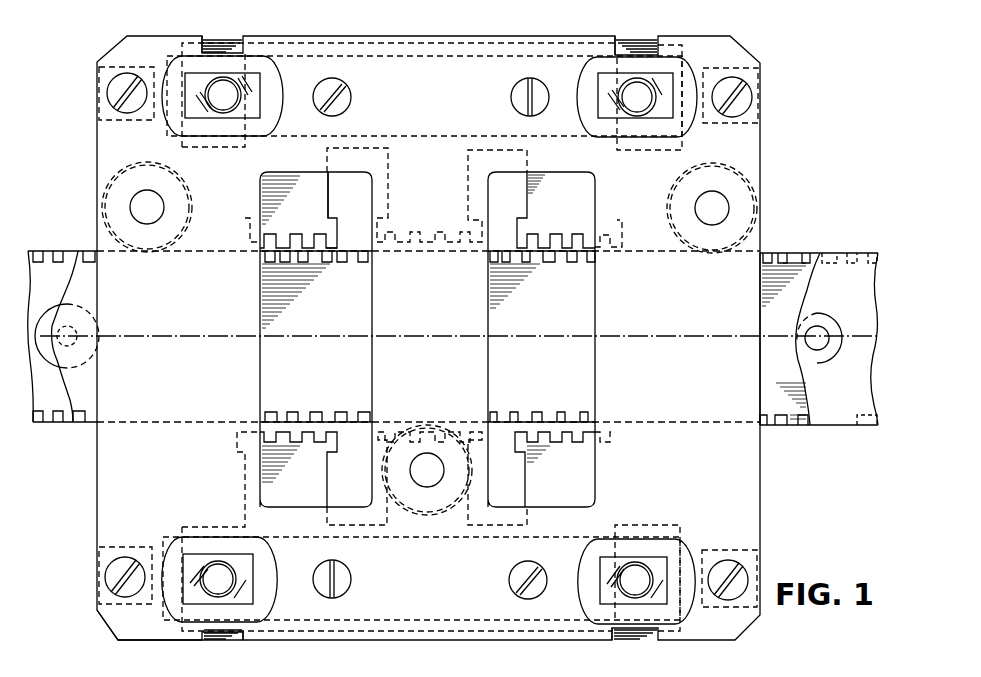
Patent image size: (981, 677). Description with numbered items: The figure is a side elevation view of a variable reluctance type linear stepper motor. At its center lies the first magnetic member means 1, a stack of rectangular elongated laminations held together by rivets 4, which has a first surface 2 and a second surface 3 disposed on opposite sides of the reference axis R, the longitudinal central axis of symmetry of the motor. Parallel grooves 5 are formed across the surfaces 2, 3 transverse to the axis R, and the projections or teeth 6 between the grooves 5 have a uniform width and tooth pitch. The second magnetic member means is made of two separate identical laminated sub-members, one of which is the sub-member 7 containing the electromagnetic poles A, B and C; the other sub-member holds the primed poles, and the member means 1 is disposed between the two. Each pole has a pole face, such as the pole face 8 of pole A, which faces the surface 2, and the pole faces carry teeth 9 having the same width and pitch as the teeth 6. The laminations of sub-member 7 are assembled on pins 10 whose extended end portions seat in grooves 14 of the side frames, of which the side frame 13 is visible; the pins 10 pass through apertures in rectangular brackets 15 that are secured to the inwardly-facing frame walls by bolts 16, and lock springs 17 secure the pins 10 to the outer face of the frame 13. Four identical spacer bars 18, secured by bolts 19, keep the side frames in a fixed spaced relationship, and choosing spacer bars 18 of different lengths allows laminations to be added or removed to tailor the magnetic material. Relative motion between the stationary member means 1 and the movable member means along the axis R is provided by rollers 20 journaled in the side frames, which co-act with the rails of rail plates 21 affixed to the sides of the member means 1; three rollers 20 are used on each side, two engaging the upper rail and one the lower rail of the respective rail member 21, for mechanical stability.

The first magnetic member means 1 is at (780, 391).
The first surface 2 is at (672, 257).
The second surface 3 is at (666, 421).
The rivets 4 is at (54, 358).
The grooves 5 is at (784, 252).
The teeth 6 is at (84, 251).
The sub-member 7 is at (222, 46).
The pole face 8 is at (336, 246).
The teeth 9 is at (318, 235).
The pins 10 is at (233, 104).
The side frame 13 is at (694, 486).
The grooves 14 is at (204, 45).
The rectangular brackets 15 is at (408, 54).
The bolts 16 is at (346, 104).
The lock springs 17 is at (272, 82).
The spacer bars 18 is at (110, 65).
The bolts 19 is at (118, 88).
The rollers 20 is at (182, 198).
The rail plates 21 is at (44, 290).
The pole A is at (309, 202).
The pole B is at (433, 202).
The pole C is at (576, 203).
The reference axis R is at (440, 337).